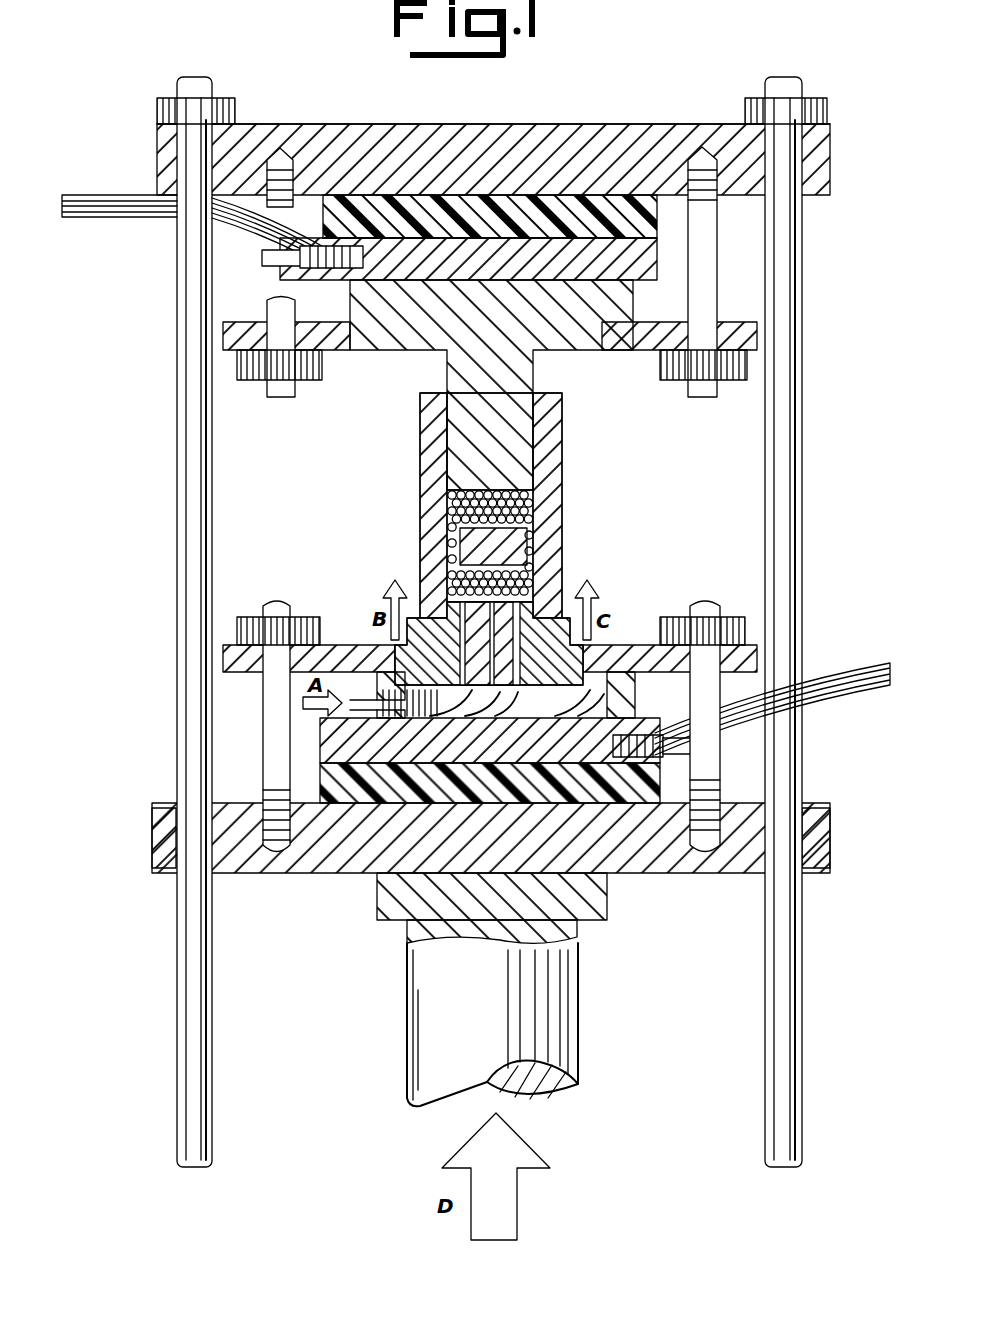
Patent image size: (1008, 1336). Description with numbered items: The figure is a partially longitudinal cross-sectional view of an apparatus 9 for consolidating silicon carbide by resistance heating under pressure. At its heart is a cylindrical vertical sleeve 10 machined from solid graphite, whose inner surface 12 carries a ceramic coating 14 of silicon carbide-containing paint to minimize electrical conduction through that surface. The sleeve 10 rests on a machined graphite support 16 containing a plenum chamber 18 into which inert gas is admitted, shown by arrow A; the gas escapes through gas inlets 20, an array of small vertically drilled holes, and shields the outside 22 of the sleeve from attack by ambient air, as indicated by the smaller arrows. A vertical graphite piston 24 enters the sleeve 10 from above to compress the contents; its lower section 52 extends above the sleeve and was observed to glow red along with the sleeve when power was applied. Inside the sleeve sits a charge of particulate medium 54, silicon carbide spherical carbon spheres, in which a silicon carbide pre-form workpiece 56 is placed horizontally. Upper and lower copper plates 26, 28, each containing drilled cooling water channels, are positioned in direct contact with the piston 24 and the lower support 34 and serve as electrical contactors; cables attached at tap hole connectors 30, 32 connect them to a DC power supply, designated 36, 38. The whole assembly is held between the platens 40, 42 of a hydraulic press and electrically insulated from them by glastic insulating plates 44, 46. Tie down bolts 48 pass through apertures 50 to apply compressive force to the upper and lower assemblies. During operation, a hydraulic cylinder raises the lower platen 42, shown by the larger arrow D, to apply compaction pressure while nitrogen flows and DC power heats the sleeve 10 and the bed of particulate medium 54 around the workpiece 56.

The apparatus 9 is at (828, 460).
The cylindrical vertical sleeve 10 is at (548, 536).
The inner surface 12 is at (521, 470).
The ceramic coating 14 is at (456, 468).
The graphite support 16 is at (606, 690).
The plenum chamber 18 is at (556, 640).
The gas inlets 20 is at (540, 615).
The outside of vertical sleeve 22 is at (418, 420).
The vertical graphite piston 24 is at (524, 433).
The upper copper plate 26 is at (480, 246).
The lower copper plate 28 is at (575, 750).
The tap hole connector 30 is at (480, 252).
The tap hole connector 32 is at (664, 736).
The lower support 34 is at (610, 698).
The DC power supply connection 36 is at (100, 200).
The DC power supply connection 38 is at (846, 683).
The upper platen 40 is at (567, 130).
The lower platen 42 is at (746, 866).
The insulating plate 44 is at (613, 207).
The insulating plate 46 is at (343, 803).
The tie down bolts 48 is at (190, 566).
The apertures 50 is at (233, 118).
The lower section of plunger 52 is at (472, 378).
The particulate medium 54 is at (524, 508).
The workpiece 56 is at (478, 545).